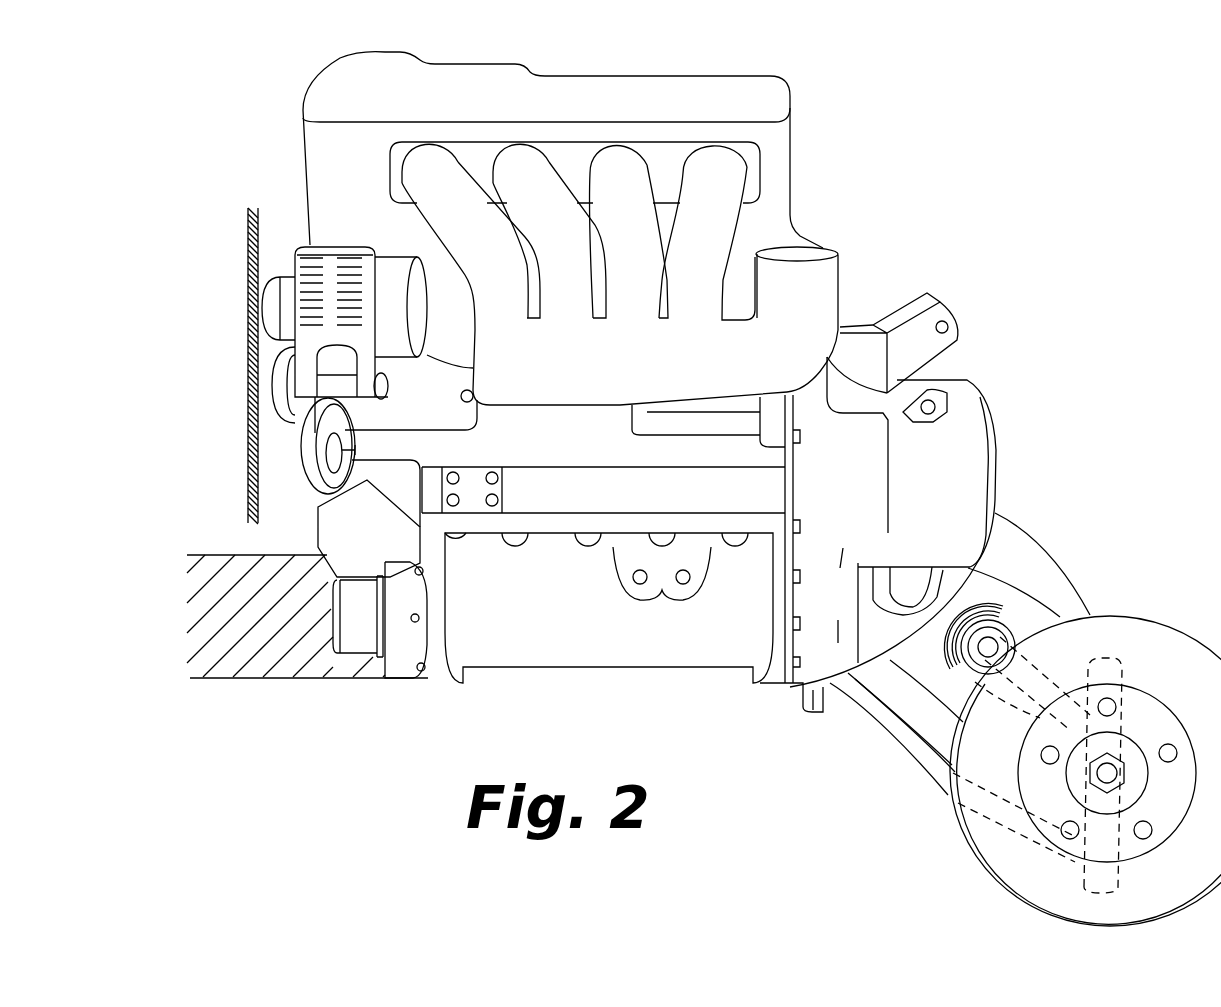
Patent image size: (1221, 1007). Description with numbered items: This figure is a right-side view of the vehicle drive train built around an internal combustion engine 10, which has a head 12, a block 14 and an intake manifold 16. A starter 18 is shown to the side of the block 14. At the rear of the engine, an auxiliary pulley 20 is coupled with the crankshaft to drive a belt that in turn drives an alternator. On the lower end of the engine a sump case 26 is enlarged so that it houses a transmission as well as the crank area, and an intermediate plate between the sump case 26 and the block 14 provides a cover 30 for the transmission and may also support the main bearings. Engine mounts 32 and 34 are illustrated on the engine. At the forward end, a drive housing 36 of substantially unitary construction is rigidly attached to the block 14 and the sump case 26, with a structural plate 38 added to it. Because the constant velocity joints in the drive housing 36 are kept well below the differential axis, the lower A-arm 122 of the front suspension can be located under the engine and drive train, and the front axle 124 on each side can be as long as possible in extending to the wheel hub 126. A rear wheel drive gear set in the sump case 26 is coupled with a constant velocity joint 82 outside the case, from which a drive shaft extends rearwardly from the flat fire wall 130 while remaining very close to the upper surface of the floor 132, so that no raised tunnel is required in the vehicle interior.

The internal combustion engine 10 is at (810, 122).
The head 12 is at (793, 165).
The block 14 is at (555, 447).
The intake manifold 16 is at (822, 277).
The starter 18 is at (697, 423).
The auxiliary pulley 20 is at (308, 447).
The sump case 26 is at (555, 650).
The cover 30 is at (758, 500).
The engine mount 32 is at (473, 503).
The engine mount 34 is at (930, 348).
The drive housing 36 is at (975, 485).
The structural plate 38 is at (990, 400).
The constant velocity joint 82 is at (362, 638).
The lower A-arm 122 is at (897, 750).
The front axle 124 is at (1015, 700).
The wheel hub 126 is at (1178, 718).
The fire wall 130 is at (248, 420).
The floor 132 is at (252, 555).